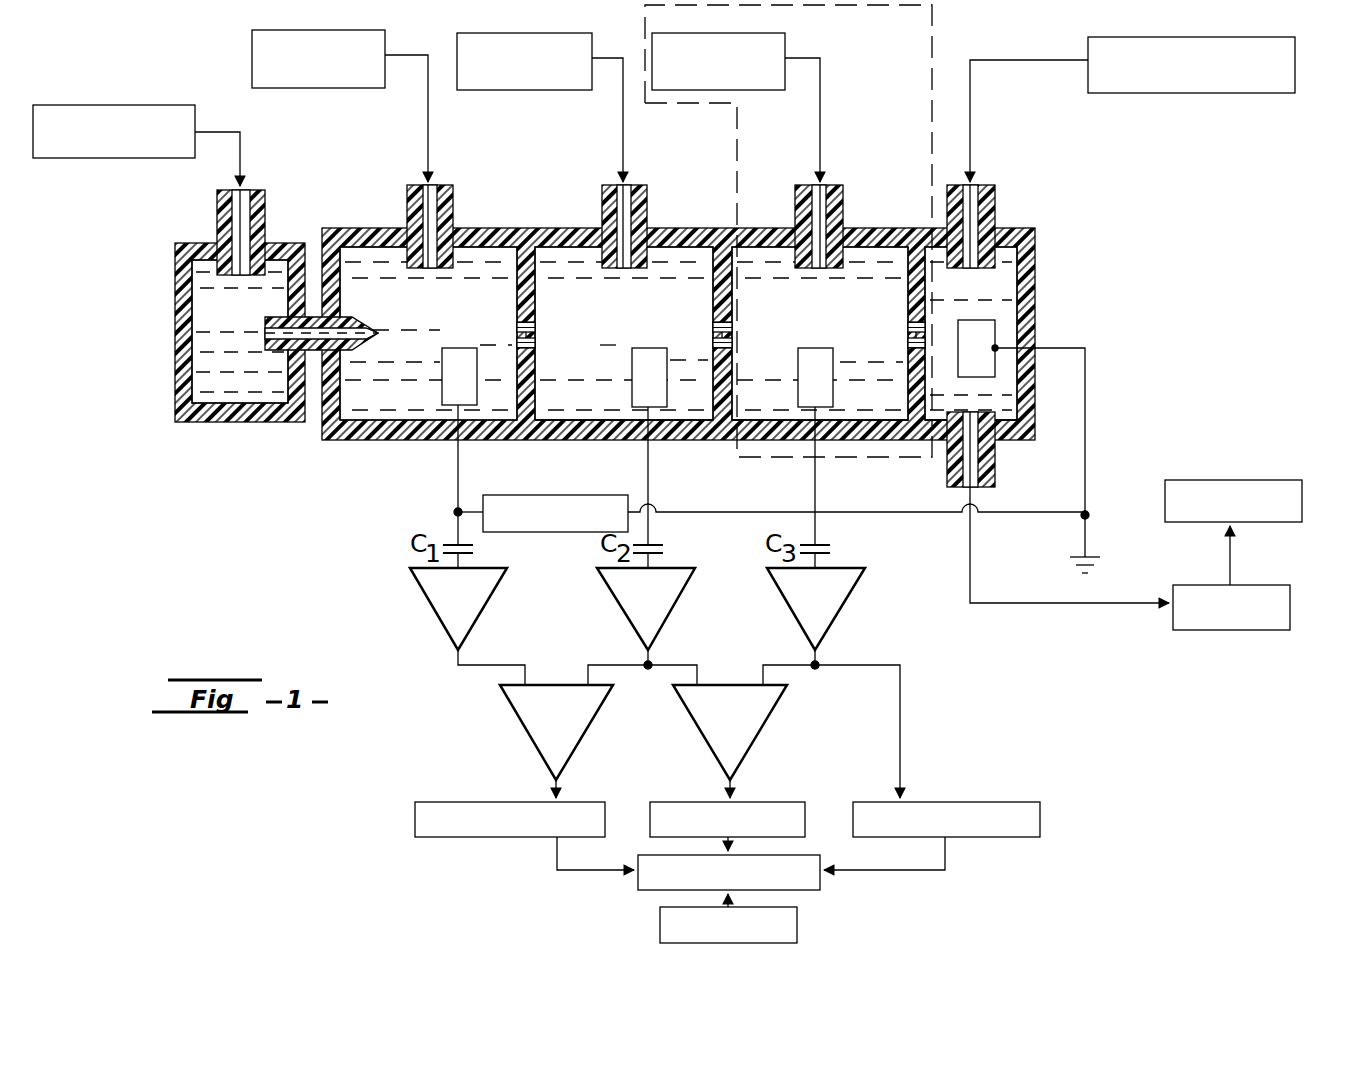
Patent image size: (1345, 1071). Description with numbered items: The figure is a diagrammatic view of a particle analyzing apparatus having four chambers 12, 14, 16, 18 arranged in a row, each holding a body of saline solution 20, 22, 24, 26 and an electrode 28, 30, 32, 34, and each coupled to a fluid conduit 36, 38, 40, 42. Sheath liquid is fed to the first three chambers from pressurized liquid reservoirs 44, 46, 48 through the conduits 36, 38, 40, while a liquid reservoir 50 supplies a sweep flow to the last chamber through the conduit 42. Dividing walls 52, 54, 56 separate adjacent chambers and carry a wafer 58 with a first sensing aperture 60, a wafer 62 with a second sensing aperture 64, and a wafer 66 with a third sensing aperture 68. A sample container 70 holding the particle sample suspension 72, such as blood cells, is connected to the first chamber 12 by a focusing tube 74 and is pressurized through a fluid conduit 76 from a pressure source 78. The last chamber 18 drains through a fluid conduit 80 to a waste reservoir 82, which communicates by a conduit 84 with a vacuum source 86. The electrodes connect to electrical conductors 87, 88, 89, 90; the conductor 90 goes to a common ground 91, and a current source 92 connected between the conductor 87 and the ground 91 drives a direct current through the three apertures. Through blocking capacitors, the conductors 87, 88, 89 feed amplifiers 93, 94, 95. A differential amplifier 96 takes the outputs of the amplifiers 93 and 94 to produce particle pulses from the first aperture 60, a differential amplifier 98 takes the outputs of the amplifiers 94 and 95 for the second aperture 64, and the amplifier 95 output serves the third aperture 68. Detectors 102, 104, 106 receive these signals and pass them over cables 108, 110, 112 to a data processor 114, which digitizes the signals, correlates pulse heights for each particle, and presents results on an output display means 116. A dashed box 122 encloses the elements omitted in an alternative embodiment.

The chamber 12 is at (378, 422).
The chamber 14 is at (588, 415).
The chamber 16 is at (780, 418).
The chamber 18 is at (1010, 420).
The body of saline solution 20 is at (498, 304).
The body of saline solution 22 is at (688, 304).
The body of saline solution 24 is at (889, 306).
The body of saline solution 26 is at (962, 288).
The electrode 28 is at (458, 348).
The electrode 30 is at (650, 348).
The electrode 32 is at (812, 348).
The electrode 34 is at (970, 320).
The fluid conduit 36 is at (396, 55).
The fluid conduit 38 is at (595, 58).
The fluid conduit 40 is at (815, 58).
The fluid conduit 42 is at (1000, 60).
The pressurized liquid reservoir 44 is at (340, 30).
The pressurized liquid reservoir 46 is at (550, 33).
The pressurized liquid reservoir 48 is at (775, 33).
The liquid reservoir 50 is at (1212, 37).
The dividing wall 52 is at (530, 300).
The dividing wall 54 is at (734, 300).
The dividing wall 56 is at (912, 382).
The wafer 58 is at (530, 324).
The first sensing aperture 60 is at (533, 343).
The wafer 62 is at (732, 326).
The second sensing aperture 64 is at (732, 344).
The wafer 66 is at (908, 325).
The third sensing aperture 68 is at (908, 344).
The sample container 70 is at (190, 392).
The particle sample suspension 72 is at (240, 331).
The focusing tube 74 is at (340, 317).
The fluid conduit 76 is at (210, 132).
The pressure source 78 is at (112, 105).
The fluid conduit 80 is at (995, 474).
The waste reservoir 82 is at (1290, 612).
The conduit 84 is at (1230, 565).
The vacuum source 86 is at (1242, 480).
The electrical conductor 87 is at (458, 478).
The electrical conductor 88 is at (648, 478).
The electrical conductor 89 is at (815, 496).
The electrical conductor 90 is at (1085, 412).
The common ground 91 is at (1088, 552).
The current source 92 is at (572, 495).
The amplifier 93 is at (480, 618).
The amplifier 94 is at (670, 618).
The amplifier 95 is at (840, 618).
The differential amplifier 96 is at (582, 742).
The differential amplifier 98 is at (752, 742).
The detector 102 is at (580, 802).
The detector 104 is at (778, 802).
The detector 106 is at (908, 802).
The cable 108 is at (557, 860).
The cable 110 is at (733, 845).
The cable 112 is at (945, 858).
The data processor 114 is at (820, 884).
The output display means 116 is at (797, 928).
The dashed box 122 is at (934, 52).